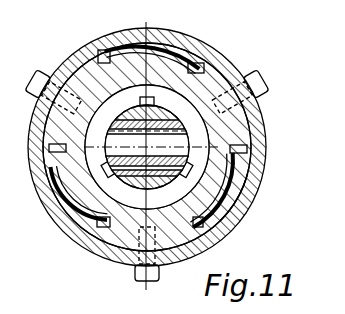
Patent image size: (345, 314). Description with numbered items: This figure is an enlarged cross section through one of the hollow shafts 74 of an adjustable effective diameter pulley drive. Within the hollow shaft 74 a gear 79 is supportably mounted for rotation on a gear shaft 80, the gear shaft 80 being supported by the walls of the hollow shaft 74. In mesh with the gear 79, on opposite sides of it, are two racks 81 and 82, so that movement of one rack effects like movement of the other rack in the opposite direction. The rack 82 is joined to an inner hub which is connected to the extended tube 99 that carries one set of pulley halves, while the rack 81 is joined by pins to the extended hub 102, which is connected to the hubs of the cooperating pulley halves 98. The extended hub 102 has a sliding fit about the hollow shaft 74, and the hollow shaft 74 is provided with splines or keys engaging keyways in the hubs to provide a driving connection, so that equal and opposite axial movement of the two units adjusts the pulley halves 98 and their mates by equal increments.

The pulley half 98 is at (131, 33).
The rack 81 is at (216, 82).
The rack 82 is at (243, 203).
The gear shaft 80 is at (218, 148).
The gear 79 is at (190, 133).
The extended tube 99 is at (186, 47).
The hollow shaft 74 is at (113, 237).
The extended hub 102 is at (100, 38).